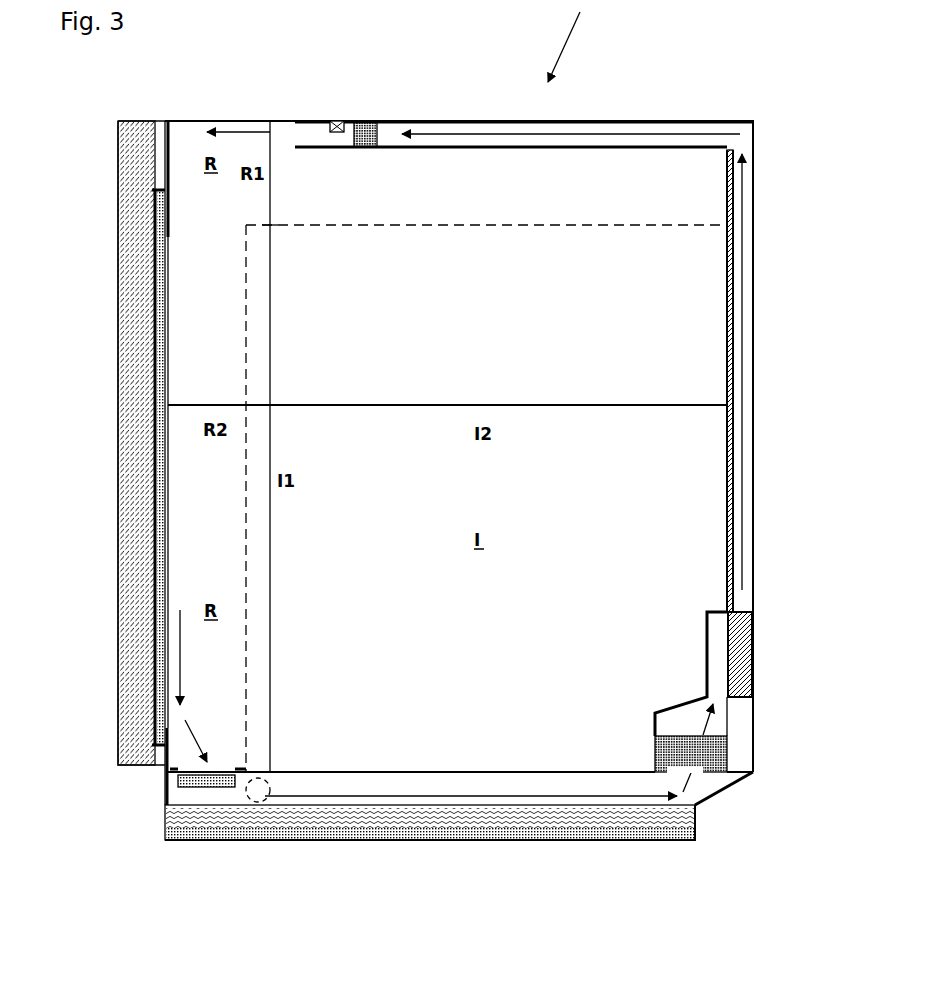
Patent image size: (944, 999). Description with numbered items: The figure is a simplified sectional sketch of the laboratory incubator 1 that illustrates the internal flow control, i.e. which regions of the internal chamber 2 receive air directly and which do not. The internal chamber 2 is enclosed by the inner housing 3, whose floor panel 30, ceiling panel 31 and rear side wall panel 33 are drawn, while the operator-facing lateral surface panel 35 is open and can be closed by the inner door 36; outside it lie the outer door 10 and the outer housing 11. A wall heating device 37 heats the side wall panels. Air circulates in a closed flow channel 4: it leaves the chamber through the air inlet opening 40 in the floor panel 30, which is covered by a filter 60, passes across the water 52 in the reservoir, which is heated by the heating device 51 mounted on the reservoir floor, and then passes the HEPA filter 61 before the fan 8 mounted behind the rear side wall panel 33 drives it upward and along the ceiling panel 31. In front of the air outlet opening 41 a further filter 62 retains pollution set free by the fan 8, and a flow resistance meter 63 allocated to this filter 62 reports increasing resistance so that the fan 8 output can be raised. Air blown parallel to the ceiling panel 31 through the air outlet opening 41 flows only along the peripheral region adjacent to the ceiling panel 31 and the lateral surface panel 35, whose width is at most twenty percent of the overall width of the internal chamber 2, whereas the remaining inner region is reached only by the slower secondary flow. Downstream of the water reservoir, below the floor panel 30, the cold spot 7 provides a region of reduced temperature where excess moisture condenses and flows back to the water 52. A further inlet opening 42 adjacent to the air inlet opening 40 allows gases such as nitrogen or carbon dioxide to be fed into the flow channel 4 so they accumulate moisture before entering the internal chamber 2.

The laboratory incubator 1 is at (566, 41).
The internal chamber 2 is at (446, 483).
The inner housing 3 is at (655, 148).
The flow channel 4 is at (690, 125).
The cold spot 7 is at (712, 800).
The fan 8 is at (745, 616).
The outer door 10 is at (130, 432).
The outer housing 11 is at (592, 121).
The floor panel 30 is at (470, 770).
The ceiling panel 31 is at (567, 146).
The rear side wall panel 33 is at (727, 367).
The lateral surface panel 35 is at (150, 172).
The inner door 36 is at (155, 540).
The wall heating device 37 is at (727, 300).
The air inlet opening 40 is at (197, 768).
The air outlet opening 41 is at (300, 140).
The inlet opening 42 is at (258, 792).
The heating device 51 is at (520, 840).
The water 52 is at (185, 818).
The filter 60 is at (172, 779).
The HEPA filter 61 is at (652, 742).
The filter 62 is at (368, 120).
The flow resistance meter 63 is at (340, 124).